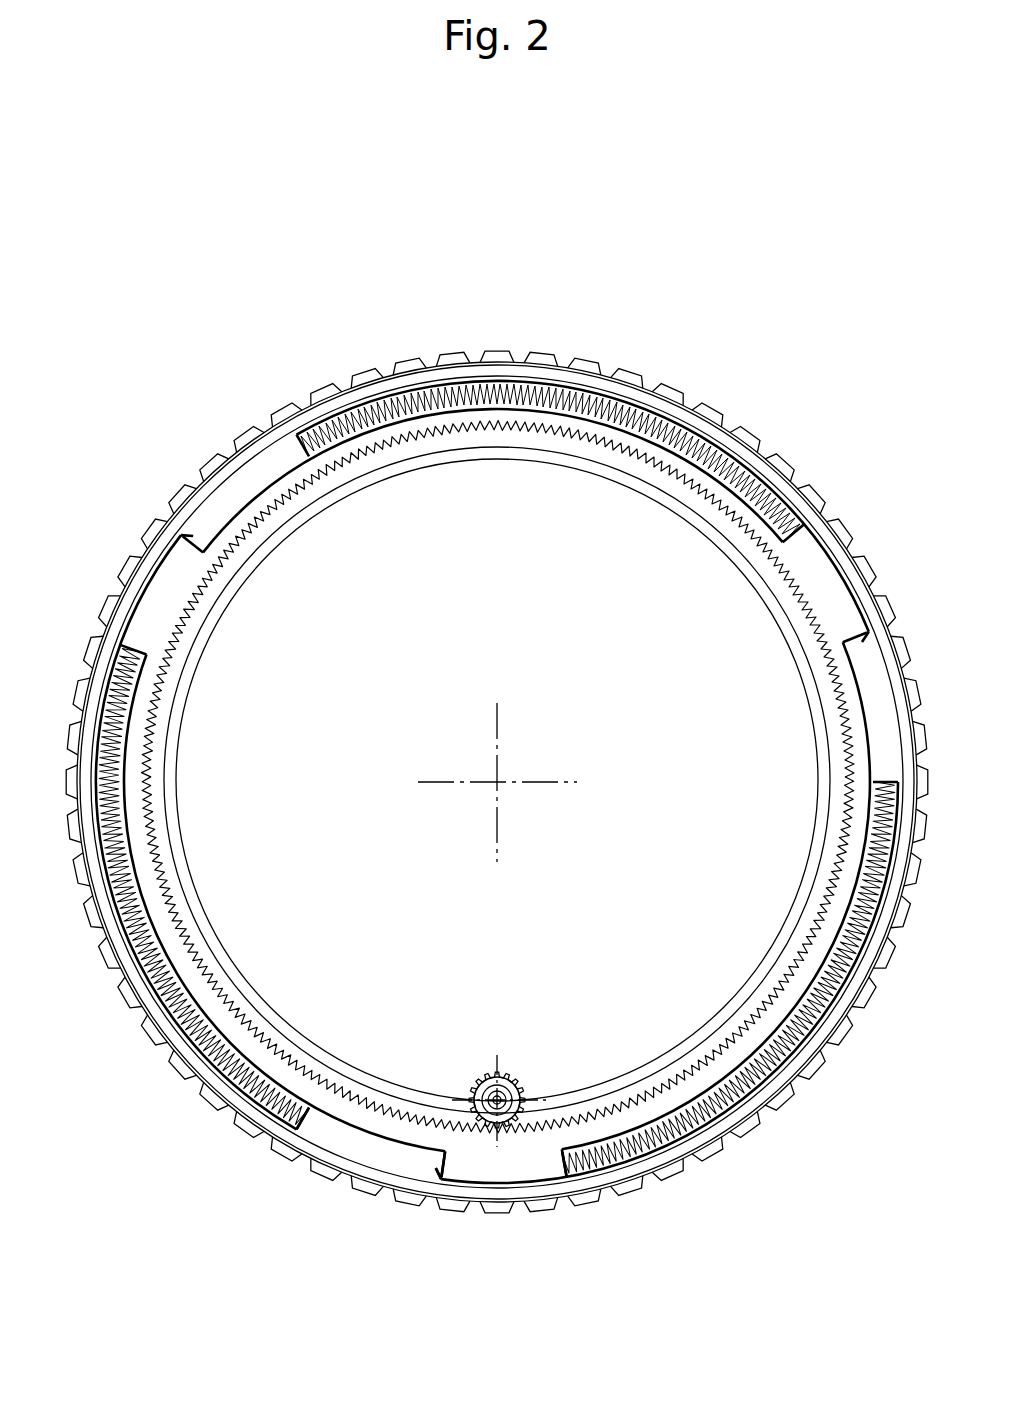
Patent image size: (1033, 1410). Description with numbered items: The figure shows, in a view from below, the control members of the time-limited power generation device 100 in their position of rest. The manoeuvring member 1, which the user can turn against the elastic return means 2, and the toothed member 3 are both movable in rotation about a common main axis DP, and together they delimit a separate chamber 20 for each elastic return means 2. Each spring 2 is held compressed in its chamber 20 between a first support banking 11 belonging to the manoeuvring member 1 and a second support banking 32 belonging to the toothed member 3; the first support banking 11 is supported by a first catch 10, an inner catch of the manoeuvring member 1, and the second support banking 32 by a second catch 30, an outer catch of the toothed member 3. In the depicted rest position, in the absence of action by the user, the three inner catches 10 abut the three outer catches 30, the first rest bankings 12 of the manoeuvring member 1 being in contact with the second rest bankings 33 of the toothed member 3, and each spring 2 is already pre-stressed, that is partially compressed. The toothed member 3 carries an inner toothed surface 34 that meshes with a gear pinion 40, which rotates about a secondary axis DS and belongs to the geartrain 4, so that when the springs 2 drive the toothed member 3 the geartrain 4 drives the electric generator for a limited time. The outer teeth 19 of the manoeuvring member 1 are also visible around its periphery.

The time-limited power generation device 100 is at (107, 291).
The manoeuvring member 1 is at (373, 388).
The external teeth 19 is at (566, 362).
The elastic return means 2 is at (320, 428).
The toothed member 3 is at (468, 423).
The chamber 20 is at (358, 437).
The toothed surface 34 is at (262, 1032).
The geartrain 4 is at (485, 1035).
The gear pinion 40 is at (538, 1099).
The first catch 10 is at (322, 1130).
The first support banking 11 is at (293, 1112).
The first rest banking 12 is at (440, 1167).
The second catch 30 is at (530, 1167).
The second support banking 32 is at (570, 1160).
The second rest banking 33 is at (423, 1158).
The main axis DP is at (500, 780).
The secondary axis DS is at (490, 1098).